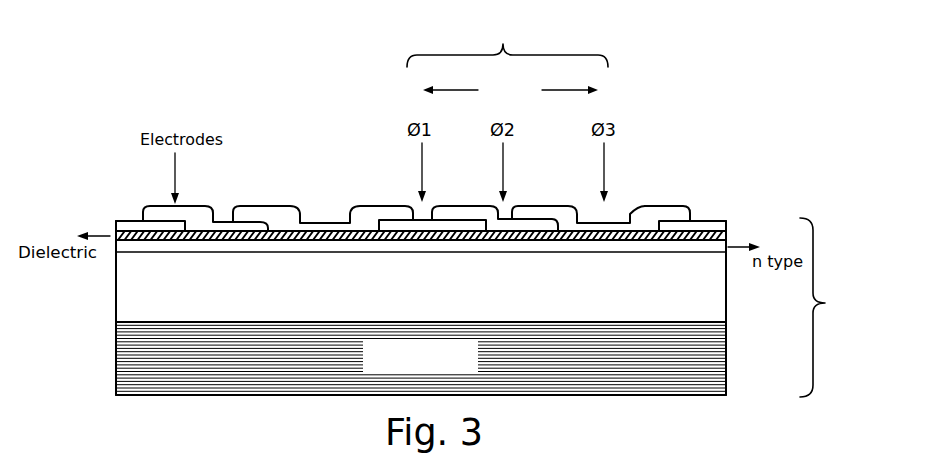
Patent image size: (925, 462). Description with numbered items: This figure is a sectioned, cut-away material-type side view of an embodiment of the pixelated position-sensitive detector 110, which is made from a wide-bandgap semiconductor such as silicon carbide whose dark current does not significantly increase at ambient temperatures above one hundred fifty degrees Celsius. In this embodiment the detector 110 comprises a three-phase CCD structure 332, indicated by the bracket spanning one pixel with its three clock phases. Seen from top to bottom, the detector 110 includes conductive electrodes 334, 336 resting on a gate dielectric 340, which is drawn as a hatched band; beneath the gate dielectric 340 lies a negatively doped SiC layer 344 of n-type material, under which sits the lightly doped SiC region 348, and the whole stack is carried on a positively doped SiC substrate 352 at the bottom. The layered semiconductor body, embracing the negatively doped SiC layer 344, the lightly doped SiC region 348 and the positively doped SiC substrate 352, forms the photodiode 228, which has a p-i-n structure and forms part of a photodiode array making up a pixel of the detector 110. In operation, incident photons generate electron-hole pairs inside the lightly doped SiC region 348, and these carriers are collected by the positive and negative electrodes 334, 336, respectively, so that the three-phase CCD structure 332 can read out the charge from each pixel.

The pixelated position-sensitive detector 110 is at (741, 197).
The photodiode 228 is at (463, 307).
The three-phase CCD structure 332 is at (507, 58).
The conductive electrode 334 is at (195, 203).
The conductive electrode 336 is at (662, 207).
The gate dielectric 340 is at (727, 237).
The negatively doped SiC layer 344 is at (135, 252).
The lightly doped SiC region 348 is at (727, 303).
The positively doped SiC substrate 352 is at (727, 358).